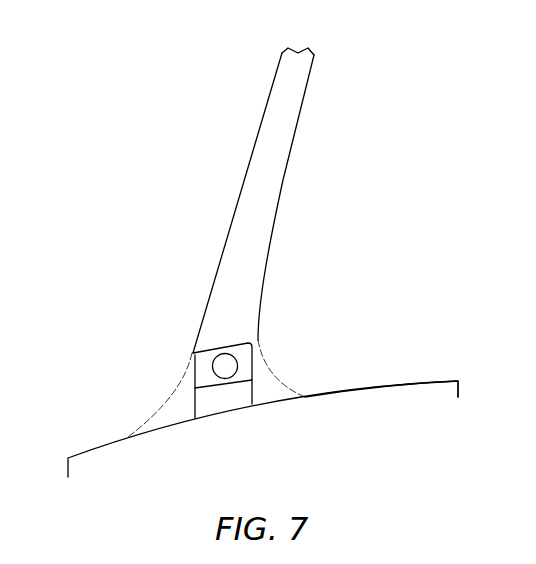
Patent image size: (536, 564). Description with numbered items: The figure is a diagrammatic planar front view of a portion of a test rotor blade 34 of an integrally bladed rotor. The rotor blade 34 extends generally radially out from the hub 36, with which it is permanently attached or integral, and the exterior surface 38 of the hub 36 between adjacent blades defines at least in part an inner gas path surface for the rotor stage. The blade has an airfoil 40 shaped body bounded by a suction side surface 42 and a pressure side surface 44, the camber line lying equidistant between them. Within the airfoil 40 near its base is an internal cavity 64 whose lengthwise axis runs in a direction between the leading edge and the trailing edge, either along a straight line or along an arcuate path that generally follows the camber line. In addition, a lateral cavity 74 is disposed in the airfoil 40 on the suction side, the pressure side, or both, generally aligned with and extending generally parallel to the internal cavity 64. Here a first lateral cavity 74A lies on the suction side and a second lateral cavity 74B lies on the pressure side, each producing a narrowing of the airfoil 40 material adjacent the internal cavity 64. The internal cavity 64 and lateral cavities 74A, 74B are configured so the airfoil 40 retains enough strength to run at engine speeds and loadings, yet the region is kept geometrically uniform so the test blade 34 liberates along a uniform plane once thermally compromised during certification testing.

The rotor blade 34 is at (381, 81).
The hub 36 is at (95, 450).
The exterior surface 38 is at (433, 380).
The airfoil 40 is at (283, 200).
The suction side surface 42 is at (250, 160).
The pressure side surface 44 is at (294, 133).
The internal cavity 64 is at (225, 370).
The lateral cavity 74 is at (220, 381).
The first lateral cavity 74A is at (187, 382).
The second lateral cavity 74B is at (260, 370).